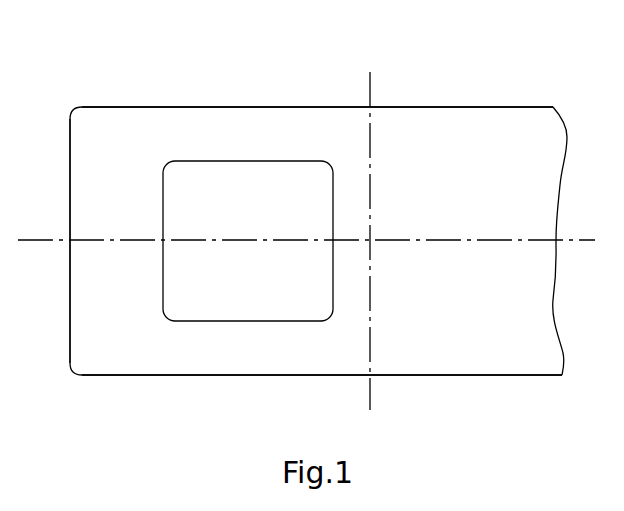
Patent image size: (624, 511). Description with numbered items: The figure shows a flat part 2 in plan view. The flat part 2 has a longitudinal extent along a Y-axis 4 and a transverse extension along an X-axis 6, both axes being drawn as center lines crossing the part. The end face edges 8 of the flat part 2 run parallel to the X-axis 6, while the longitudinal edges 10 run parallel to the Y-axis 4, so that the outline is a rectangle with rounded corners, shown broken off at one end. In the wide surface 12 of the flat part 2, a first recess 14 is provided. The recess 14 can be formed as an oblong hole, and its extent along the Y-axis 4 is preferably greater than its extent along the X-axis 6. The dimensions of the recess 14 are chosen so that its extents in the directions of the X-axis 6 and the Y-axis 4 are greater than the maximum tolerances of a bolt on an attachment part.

The flat part 2 is at (463, 75).
The Y-axis 4 is at (499, 240).
The X-axis 6 is at (370, 182).
The end face edges 8 is at (70, 153).
The longitudinal edges 10 is at (232, 106).
The wide surface 12 is at (486, 329).
The first recess 14 is at (272, 183).